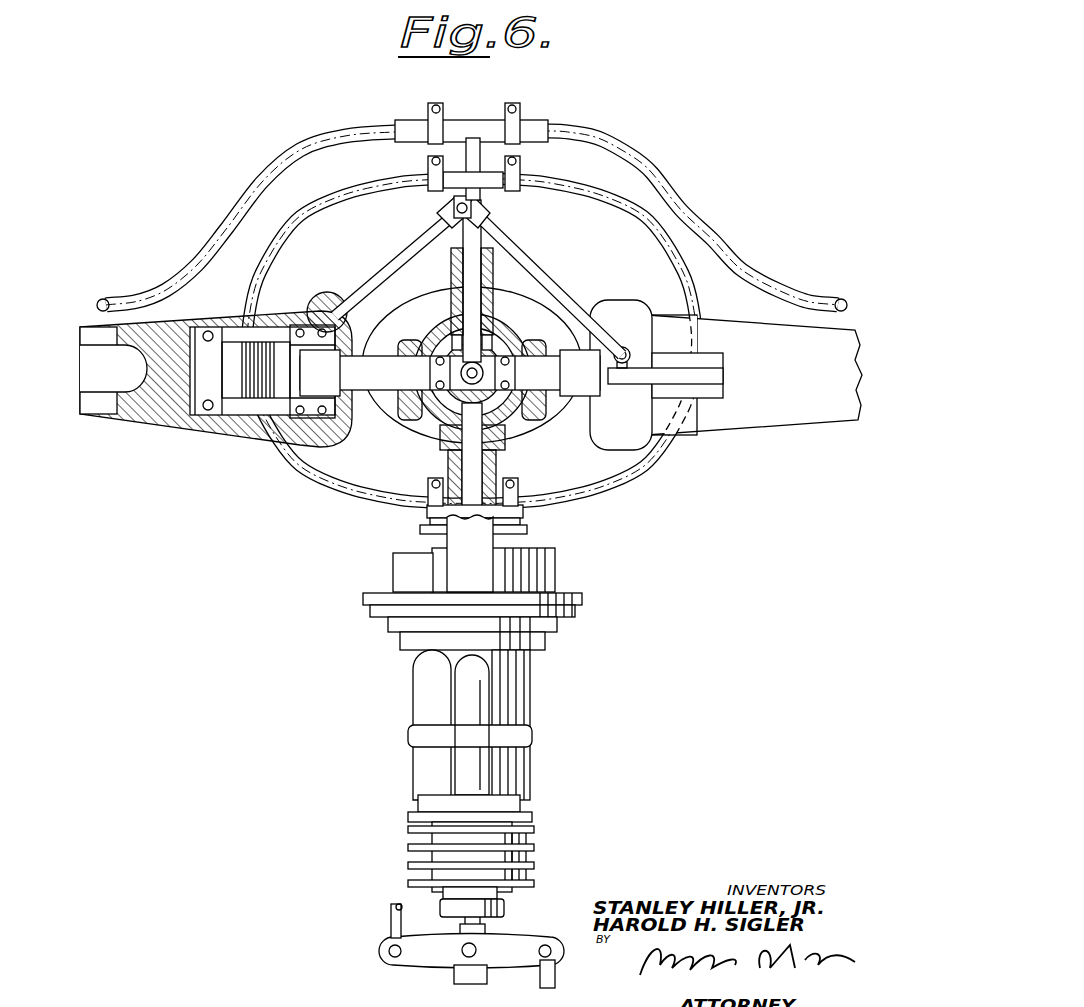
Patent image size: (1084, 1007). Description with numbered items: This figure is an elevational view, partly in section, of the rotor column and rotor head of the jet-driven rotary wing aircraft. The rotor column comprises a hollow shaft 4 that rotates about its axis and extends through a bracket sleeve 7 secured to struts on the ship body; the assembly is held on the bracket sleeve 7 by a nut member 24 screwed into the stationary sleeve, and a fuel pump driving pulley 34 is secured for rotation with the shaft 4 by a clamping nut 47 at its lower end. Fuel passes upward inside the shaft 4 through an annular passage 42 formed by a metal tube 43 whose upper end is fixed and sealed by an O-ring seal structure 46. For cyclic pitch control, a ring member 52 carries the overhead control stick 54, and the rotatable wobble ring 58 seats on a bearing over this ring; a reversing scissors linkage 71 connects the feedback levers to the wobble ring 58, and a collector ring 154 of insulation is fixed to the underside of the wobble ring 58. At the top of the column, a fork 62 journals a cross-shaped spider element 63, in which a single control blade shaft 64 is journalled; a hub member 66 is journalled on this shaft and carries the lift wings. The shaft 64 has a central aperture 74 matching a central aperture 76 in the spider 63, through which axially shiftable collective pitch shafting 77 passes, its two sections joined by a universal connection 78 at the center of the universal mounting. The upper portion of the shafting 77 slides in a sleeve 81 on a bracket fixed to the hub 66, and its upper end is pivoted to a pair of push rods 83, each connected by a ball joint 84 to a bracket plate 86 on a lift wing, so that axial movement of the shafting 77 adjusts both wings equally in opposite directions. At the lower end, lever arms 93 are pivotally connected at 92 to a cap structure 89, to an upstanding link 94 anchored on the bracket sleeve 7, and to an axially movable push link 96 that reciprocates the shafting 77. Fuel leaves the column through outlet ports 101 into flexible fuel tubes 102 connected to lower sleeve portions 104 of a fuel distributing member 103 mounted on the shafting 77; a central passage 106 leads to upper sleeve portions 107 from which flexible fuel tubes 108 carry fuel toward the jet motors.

The hollow shaft 4 is at (500, 466).
The bracket sleeve 7 is at (520, 695).
The nut member 24 is at (445, 800).
The fuel pump driving pulley 34 is at (413, 842).
The annular passage 42 is at (502, 474).
The metal tube 43 is at (458, 468).
The O-ring seal structure 46 is at (468, 448).
The clamping nut 47 is at (500, 915).
The ring member 52 is at (393, 641).
The control stick 54 is at (455, 766).
The wobble ring 58 is at (556, 570).
The fork 62 is at (525, 440).
The spider element 63 is at (498, 345).
The control blade shaft 64 is at (514, 356).
The hub member 66 is at (422, 292).
The reversing scissors linkage 71 is at (482, 572).
The central aperture 74 is at (460, 395).
The central aperture 76 is at (490, 322).
The shafting 77 is at (474, 290).
The universal connection 78 is at (457, 352).
The sleeve 81 is at (483, 268).
The push rods 83 is at (415, 252).
The ball joint 84 is at (630, 352).
The bracket plate 86 is at (716, 378).
The cap structure 89 is at (457, 970).
The pivotal connection 92 is at (477, 948).
The lever arms 93 is at (420, 952).
The upstanding link 94 is at (388, 922).
The push link 96 is at (548, 990).
The outlet ports 101 is at (437, 510).
The flexible fuel tube 102 is at (275, 255).
The fuel distributing member 103 is at (469, 125).
The lower sleeve portions 104 is at (458, 185).
The central passage 106 is at (480, 152).
The upper sleeve portions 107 is at (447, 125).
The flexible fuel tube 108 is at (318, 150).
The collector ring 154 is at (583, 612).